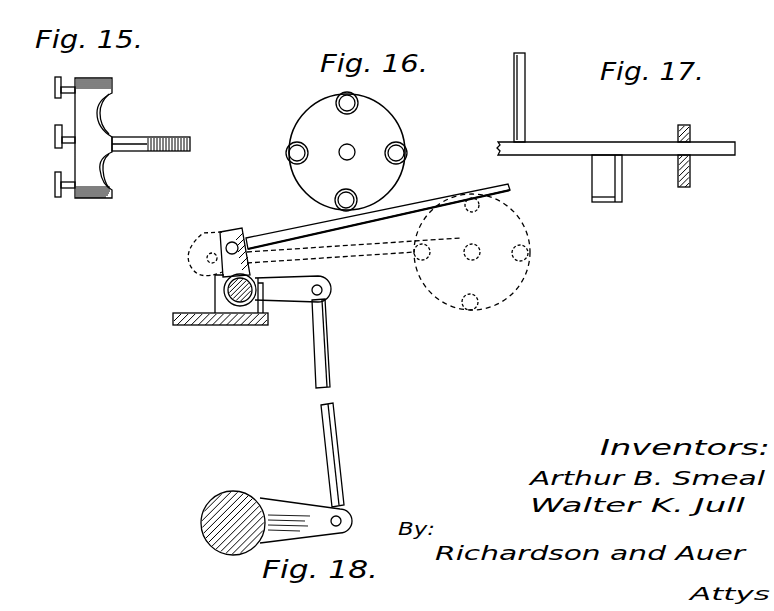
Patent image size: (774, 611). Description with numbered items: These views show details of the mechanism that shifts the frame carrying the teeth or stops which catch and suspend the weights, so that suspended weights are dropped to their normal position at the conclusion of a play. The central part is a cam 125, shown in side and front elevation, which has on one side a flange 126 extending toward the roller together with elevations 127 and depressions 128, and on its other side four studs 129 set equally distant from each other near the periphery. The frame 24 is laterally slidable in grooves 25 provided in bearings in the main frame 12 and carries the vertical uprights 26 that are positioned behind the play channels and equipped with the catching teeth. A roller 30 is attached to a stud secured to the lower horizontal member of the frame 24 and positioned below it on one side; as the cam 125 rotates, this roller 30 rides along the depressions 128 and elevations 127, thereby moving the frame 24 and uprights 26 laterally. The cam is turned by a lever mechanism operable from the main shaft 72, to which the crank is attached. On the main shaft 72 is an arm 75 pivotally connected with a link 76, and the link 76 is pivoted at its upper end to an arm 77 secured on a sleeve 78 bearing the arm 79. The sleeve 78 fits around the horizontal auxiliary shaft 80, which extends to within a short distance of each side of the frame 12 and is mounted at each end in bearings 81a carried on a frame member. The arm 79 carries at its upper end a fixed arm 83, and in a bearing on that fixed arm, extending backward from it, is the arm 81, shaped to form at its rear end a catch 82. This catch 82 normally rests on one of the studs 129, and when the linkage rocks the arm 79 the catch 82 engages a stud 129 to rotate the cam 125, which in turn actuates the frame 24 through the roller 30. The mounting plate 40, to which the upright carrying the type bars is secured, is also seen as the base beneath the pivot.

In FIG. 15, the cam 125 is at (118, 69).
In FIG. 16, the cam 125 is at (322, 108).
In FIG. 18, the cam 125 is at (513, 222).
In FIG. 15, the flange 126 is at (110, 88).
In FIG. 15, the elevations 127 is at (105, 95).
In FIG. 15, the depressions 128 is at (104, 115).
In FIG. 15, the studs 129 is at (62, 175).
In FIG. 16, the studs 129 is at (392, 147).
In FIG. 18, the studs 129 is at (475, 213).
In FIG. 17, the frame 12 is at (690, 130).
In FIG. 17, the frame 24 is at (566, 150).
In FIG. 17, the grooves 25 is at (692, 158).
In FIG. 17, the vertical uprights 26 is at (522, 88).
In FIG. 17, the roller 30 is at (622, 180).
In FIG. 18, the mounting plate 40 is at (182, 326).
In FIG. 18, the main shaft 72 is at (213, 508).
In FIG. 18, the arm 75 is at (284, 505).
In FIG. 18, the link 76 is at (314, 329).
In FIG. 18, the arm 77 is at (308, 282).
In FIG. 18, the sleeve 78 is at (225, 290).
In FIG. 18, the arm 79 is at (232, 228).
In FIG. 18, the horizontal auxiliary shaft 80 is at (226, 310).
In FIG. 18, the arm 81 is at (300, 233).
In FIG. 18, the bearings 81a is at (238, 298).
In FIG. 18, the catch 82 is at (462, 200).
In FIG. 18, the fixed arm 83 is at (240, 243).